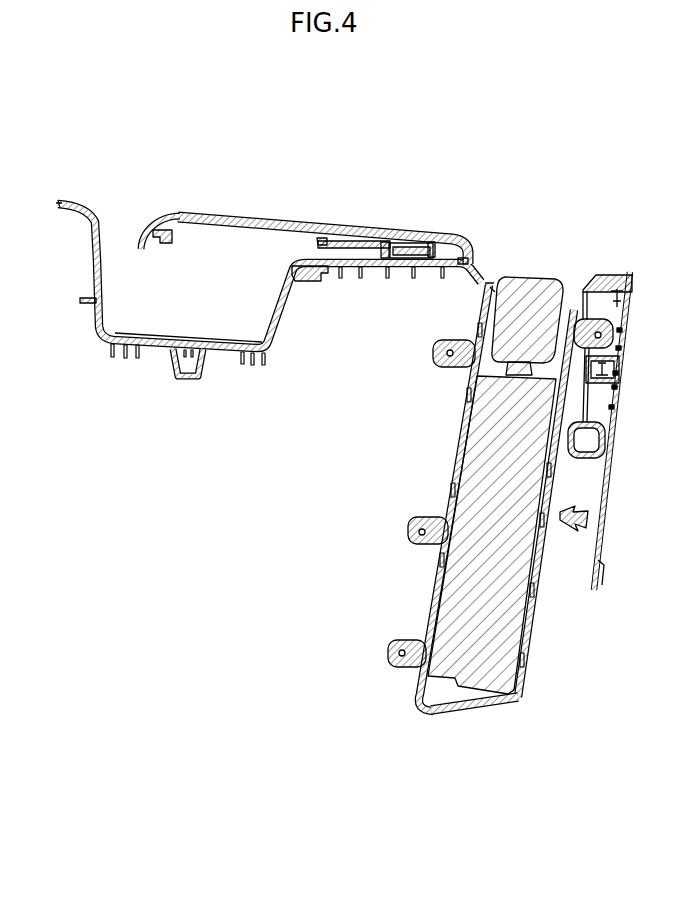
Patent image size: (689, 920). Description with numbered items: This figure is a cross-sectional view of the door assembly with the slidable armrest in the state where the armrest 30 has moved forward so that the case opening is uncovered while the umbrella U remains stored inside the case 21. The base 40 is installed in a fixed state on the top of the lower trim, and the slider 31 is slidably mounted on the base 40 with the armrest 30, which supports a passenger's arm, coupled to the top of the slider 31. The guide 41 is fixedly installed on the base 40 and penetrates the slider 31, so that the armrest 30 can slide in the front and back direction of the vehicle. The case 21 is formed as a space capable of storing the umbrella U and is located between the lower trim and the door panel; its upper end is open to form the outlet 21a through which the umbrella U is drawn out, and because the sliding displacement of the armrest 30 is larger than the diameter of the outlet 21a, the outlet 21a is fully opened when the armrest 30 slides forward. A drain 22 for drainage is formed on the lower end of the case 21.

The case 21 is at (457, 438).
The outlet 21a is at (493, 290).
The drain 22 is at (437, 716).
The armrest 30 is at (273, 216).
The slider 31 is at (198, 214).
The base 40 is at (330, 266).
The guide 41 is at (387, 241).
The umbrella U is at (505, 632).